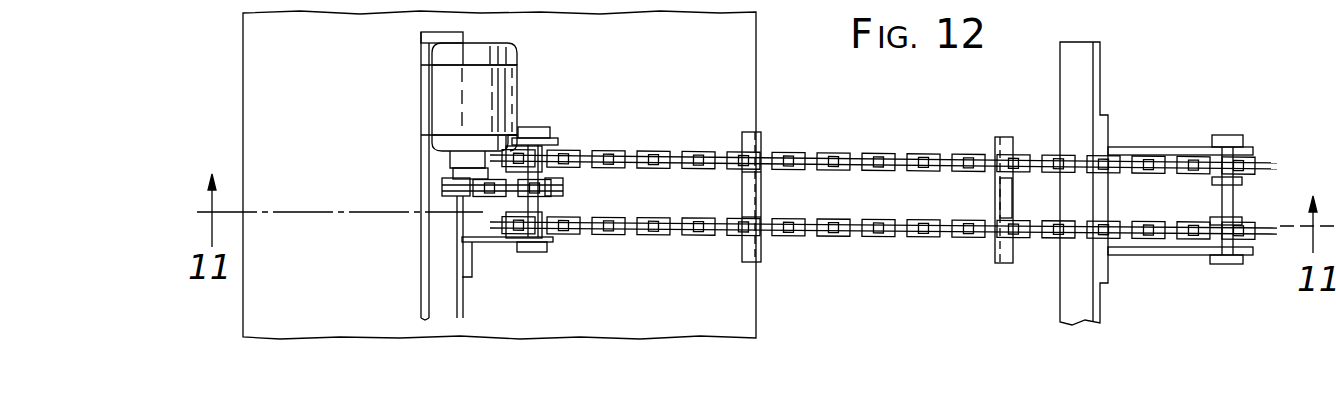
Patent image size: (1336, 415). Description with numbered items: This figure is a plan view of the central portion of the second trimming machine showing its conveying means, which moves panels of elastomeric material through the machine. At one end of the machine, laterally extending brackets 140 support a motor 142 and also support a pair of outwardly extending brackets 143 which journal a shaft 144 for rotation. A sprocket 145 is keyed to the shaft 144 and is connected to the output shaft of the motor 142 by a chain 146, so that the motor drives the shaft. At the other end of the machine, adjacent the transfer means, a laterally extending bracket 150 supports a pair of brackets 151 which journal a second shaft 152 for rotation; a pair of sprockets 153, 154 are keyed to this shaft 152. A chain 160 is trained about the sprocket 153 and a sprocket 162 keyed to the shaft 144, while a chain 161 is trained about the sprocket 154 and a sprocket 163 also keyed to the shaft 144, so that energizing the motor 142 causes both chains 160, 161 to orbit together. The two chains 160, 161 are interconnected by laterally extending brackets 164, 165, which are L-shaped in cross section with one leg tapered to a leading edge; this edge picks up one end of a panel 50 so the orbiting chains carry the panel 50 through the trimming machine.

The panel 50 is at (347, 277).
The brackets 140 is at (446, 41).
The motor 142 is at (447, 80).
The outwardly extending brackets 143 is at (557, 142).
The shaft 144 is at (557, 178).
The sprocket 145 is at (543, 202).
The chain 146 is at (442, 188).
The laterally extending bracket 150 is at (1075, 53).
The brackets 151 is at (1162, 148).
The shaft 152 is at (1222, 202).
The sprocket 153 is at (1242, 178).
The sprocket 154 is at (1222, 210).
The chain 160 is at (840, 155).
The chain 161 is at (835, 237).
The sprocket 162 is at (568, 154).
The sprocket 163 is at (548, 220).
The bracket 164 is at (1004, 140).
The bracket 165 is at (762, 250).